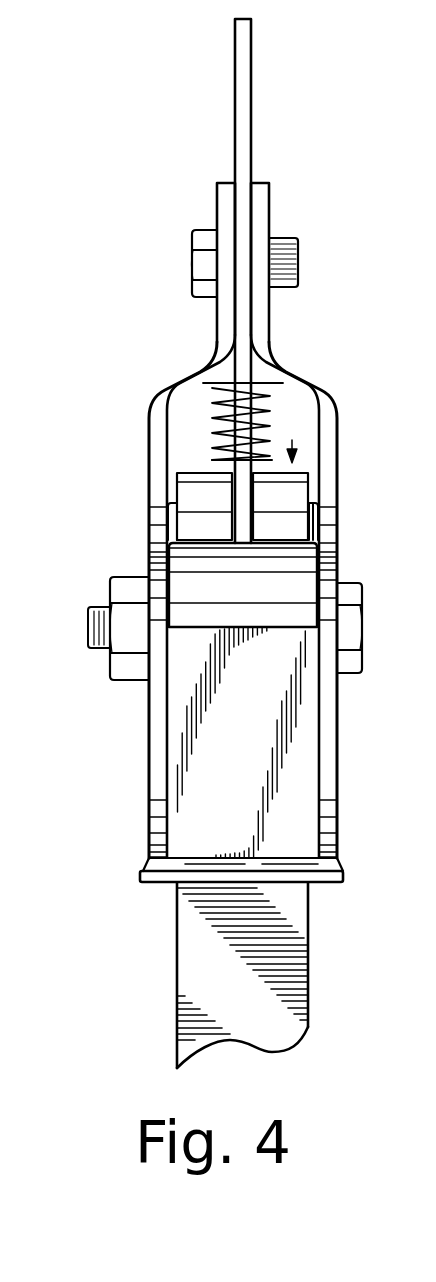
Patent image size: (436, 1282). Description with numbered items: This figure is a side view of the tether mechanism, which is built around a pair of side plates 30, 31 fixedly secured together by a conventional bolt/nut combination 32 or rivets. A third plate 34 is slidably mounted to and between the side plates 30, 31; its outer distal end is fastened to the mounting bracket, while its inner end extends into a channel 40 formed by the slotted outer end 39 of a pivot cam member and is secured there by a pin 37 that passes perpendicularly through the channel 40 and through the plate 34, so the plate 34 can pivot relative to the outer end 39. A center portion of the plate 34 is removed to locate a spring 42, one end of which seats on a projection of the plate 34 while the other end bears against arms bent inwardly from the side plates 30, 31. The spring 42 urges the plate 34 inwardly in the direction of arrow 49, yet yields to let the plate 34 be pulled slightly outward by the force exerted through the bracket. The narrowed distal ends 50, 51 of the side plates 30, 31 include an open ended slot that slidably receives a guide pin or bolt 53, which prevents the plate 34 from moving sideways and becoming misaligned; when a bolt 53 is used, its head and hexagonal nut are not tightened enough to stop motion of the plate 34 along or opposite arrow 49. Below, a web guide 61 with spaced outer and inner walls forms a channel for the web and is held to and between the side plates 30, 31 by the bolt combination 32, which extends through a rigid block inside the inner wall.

The side plate 30 is at (328, 750).
The side plate 31 is at (155, 735).
The bolt/nut combination 32 is at (88, 613).
The third plate 34 is at (246, 65).
The pin 37 is at (318, 505).
The outer end of cam member 39 is at (190, 498).
The channel 40 is at (215, 447).
The spring 42 is at (267, 420).
The arrow 49 is at (292, 444).
The distal end of plate 50 is at (260, 207).
The distal end of plate 51 is at (225, 207).
The guide pin or bolt 53 is at (285, 240).
The web guide 61 is at (192, 818).